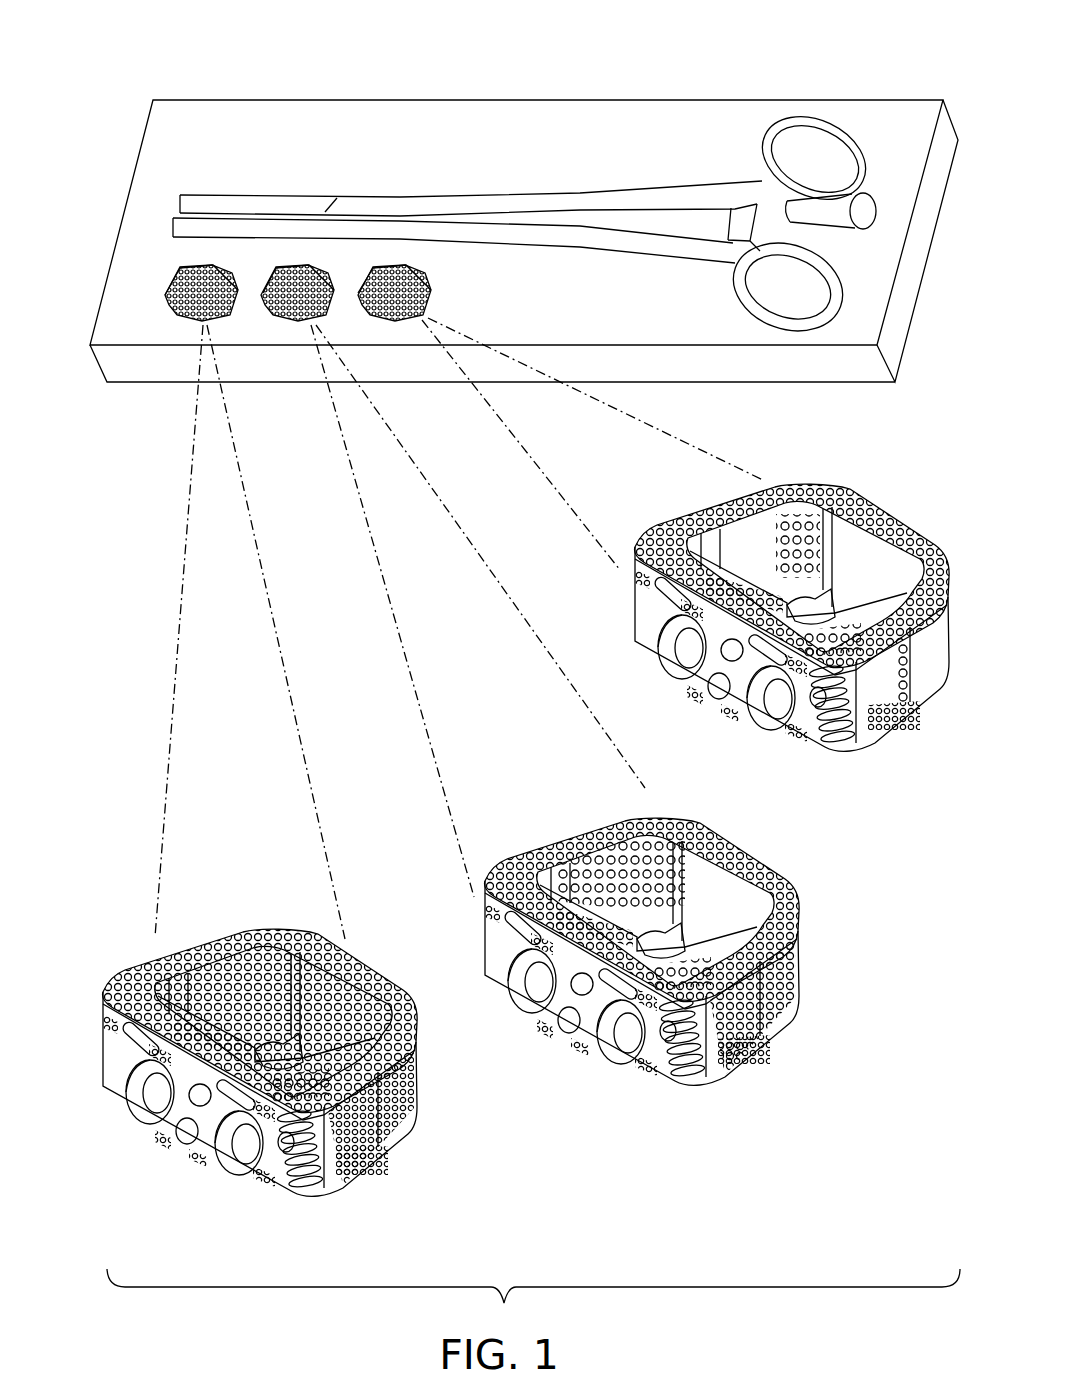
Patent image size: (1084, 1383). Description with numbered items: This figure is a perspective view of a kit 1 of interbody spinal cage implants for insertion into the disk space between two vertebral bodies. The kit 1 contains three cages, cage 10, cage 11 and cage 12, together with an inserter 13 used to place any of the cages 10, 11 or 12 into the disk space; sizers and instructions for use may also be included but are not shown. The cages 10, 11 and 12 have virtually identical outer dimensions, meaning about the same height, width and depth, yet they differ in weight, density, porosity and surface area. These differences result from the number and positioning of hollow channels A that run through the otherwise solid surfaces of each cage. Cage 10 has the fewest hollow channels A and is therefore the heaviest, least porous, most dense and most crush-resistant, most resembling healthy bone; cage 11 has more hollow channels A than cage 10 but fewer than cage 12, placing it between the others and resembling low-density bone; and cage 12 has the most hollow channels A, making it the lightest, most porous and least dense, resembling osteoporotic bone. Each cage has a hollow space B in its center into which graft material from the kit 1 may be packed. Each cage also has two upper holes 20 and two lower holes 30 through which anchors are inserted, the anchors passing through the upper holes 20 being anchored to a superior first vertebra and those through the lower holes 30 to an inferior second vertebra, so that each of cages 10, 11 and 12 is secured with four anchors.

The kit 1 is at (524, 191).
The cage 10 is at (792, 653).
The cage 11 is at (642, 976).
The cage 12 is at (260, 1087).
The inserter 13 is at (587, 190).
The upper holes 20 is at (420, 904).
The lower holes 30 is at (445, 924).
The hollow channels A is at (488, 766).
The hollow space B is at (570, 773).